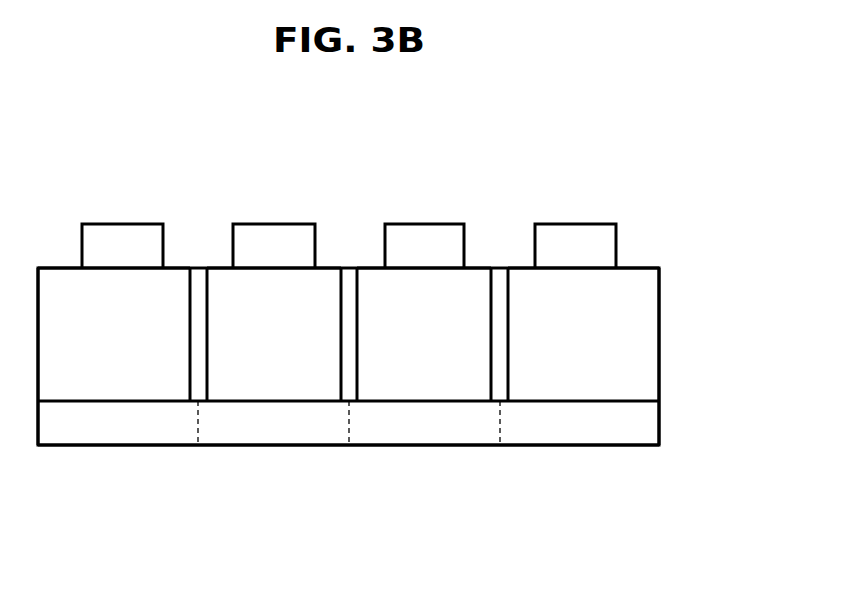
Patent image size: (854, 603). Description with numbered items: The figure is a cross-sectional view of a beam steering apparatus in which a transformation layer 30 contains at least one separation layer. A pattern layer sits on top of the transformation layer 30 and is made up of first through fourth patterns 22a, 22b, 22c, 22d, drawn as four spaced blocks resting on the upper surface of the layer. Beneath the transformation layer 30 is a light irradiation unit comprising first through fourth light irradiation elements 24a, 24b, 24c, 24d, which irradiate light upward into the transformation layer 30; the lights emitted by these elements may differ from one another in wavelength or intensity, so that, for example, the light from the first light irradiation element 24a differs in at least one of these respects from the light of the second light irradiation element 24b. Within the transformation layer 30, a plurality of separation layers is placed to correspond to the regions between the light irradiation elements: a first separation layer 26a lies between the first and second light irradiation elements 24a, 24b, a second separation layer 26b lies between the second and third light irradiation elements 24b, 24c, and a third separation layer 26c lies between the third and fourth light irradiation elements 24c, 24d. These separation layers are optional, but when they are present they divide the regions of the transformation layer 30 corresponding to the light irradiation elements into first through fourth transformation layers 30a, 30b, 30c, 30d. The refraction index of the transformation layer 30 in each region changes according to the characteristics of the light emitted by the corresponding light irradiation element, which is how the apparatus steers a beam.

The first pattern 22a is at (123, 235).
The second pattern 22b is at (275, 235).
The third pattern 22c is at (424, 235).
The fourth pattern 22d is at (575, 235).
The first light irradiation element 24a is at (123, 437).
The second light irradiation element 24b is at (273, 437).
The third light irradiation element 24c is at (424, 437).
The fourth light irradiation element 24d is at (575, 437).
The first separation layer 26a is at (200, 265).
The second separation layer 26b is at (352, 265).
The third separation layer 26c is at (502, 265).
The transformation layer 30 is at (672, 341).
The first transformation layer 30a is at (77, 372).
The second transformation layer 30b is at (233, 372).
The third transformation layer 30c is at (385, 372).
The fourth transformation layer 30d is at (540, 372).